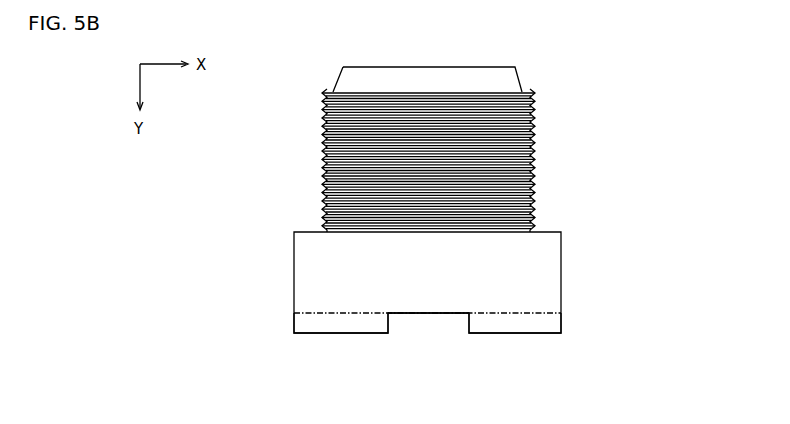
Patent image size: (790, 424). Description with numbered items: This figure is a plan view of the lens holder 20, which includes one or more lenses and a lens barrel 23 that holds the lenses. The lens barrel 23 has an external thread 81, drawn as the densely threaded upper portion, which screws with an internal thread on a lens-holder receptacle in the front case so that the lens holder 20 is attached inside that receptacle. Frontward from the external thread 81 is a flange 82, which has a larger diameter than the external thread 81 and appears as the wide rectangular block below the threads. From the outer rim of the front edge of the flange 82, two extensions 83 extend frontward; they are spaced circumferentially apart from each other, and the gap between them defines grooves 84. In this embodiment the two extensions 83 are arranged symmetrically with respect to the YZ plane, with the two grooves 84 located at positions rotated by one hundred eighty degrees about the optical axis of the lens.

The lens holder 20 is at (501, 240).
The lens barrel 23 is at (275, 208).
The external thread 81 is at (536, 133).
The flange 82 is at (562, 280).
The extensions 83 is at (342, 322).
The grooves 84 is at (430, 338).